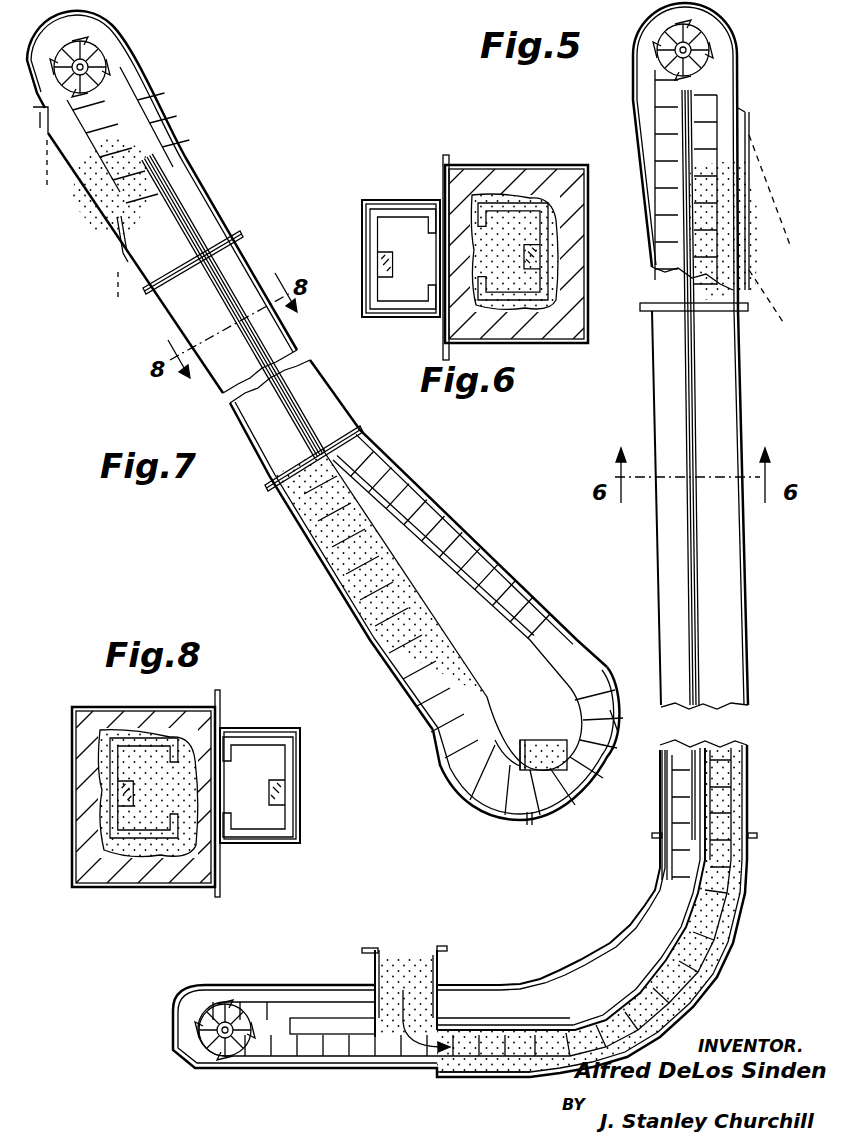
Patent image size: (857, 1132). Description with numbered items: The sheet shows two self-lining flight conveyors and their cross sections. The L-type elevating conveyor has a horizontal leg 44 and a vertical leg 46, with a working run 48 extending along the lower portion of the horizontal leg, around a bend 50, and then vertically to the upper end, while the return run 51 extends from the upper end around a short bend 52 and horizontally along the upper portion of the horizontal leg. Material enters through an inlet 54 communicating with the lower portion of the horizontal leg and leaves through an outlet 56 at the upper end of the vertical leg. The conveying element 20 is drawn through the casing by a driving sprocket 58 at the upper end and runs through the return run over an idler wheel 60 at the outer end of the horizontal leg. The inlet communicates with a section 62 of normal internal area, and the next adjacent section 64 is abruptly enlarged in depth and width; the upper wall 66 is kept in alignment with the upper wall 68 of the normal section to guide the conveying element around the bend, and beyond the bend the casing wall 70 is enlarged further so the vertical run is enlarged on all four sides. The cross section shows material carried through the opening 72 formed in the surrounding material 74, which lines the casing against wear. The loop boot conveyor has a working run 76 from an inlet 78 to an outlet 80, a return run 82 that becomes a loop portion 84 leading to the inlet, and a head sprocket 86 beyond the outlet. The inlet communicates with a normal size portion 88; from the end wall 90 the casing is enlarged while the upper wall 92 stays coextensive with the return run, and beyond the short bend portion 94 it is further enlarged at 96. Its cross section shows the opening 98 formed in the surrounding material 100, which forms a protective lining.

In FIG. 5, the conveying element 20 is at (655, 290).
In FIG. 6, the conveying element 20 is at (548, 283).
In FIG. 7, the conveying element 20 is at (345, 441).
In FIG. 8, the conveying element 20 is at (286, 810).
In FIG. 5, the horizontal leg 44 is at (365, 985).
In FIG. 5, the vertical leg 46 is at (652, 258).
In FIG. 6, the vertical leg 46 is at (589, 250).
In FIG. 5, the working run 48 is at (510, 1072).
In FIG. 5, the bend 50 is at (724, 947).
In FIG. 5, the return run 51 is at (662, 793).
In FIG. 6, the return run 51 is at (381, 200).
In FIG. 5, the short bend 52 is at (632, 934).
In FIG. 5, the inlet 54 is at (418, 988).
In FIG. 5, the outlet 56 is at (752, 170).
In FIG. 5, the driving sprocket 58 is at (705, 40).
In FIG. 5, the idler wheel 60 is at (222, 1020).
In FIG. 5, the inlet section 62 is at (412, 1070).
In FIG. 5, the enlarged section 64 is at (480, 1072).
In FIG. 5, the upper wall 66 is at (708, 888).
In FIG. 5, the upper wall 68 is at (358, 1014).
In FIG. 5, the casing wall 70 is at (692, 807).
In FIG. 6, the opening 72 is at (490, 196).
In FIG. 6, the surrounding material 74 is at (567, 166).
In FIG. 7, the working run 76 is at (455, 672).
In FIG. 8, the working run 76 is at (98, 707).
In FIG. 7, the inlet 78 is at (543, 740).
In FIG. 7, the outlet 80 is at (100, 213).
In FIG. 7, the return run 82 is at (163, 133).
In FIG. 8, the return run 82 is at (300, 757).
In FIG. 7, the loop portion 84 is at (608, 735).
In FIG. 7, the head sprocket 86 is at (103, 50).
In FIG. 7, the normal size portion 88 is at (553, 800).
In FIG. 7, the end wall 90 is at (523, 740).
In FIG. 7, the upper wall 92 is at (500, 760).
In FIG. 7, the short bend portion 94 is at (482, 803).
In FIG. 7, the further enlarged portion 96 is at (452, 682).
In FIG. 8, the opening 98 is at (140, 735).
In FIG. 8, the surrounding material 100 is at (172, 718).